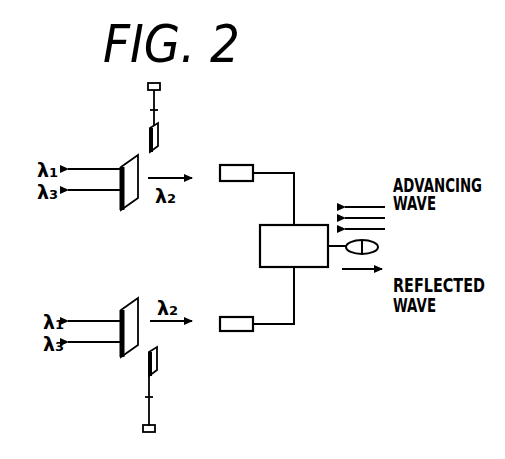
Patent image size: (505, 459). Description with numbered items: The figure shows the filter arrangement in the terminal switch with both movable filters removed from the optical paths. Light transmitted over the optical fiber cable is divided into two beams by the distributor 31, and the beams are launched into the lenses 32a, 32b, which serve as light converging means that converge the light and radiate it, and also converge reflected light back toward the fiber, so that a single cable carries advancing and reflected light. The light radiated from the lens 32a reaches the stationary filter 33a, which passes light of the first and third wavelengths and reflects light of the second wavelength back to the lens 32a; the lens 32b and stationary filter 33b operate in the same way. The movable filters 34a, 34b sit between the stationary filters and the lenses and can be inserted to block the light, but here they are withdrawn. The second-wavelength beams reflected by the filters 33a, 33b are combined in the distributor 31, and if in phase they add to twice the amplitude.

The distributor 31 is at (258, 240).
The lens 32a is at (245, 165).
The lens 32b is at (237, 332).
The stationary filter 33a is at (127, 163).
The stationary filter 33b is at (128, 302).
The movable filter 34a is at (163, 138).
The movable filter 34b is at (158, 358).